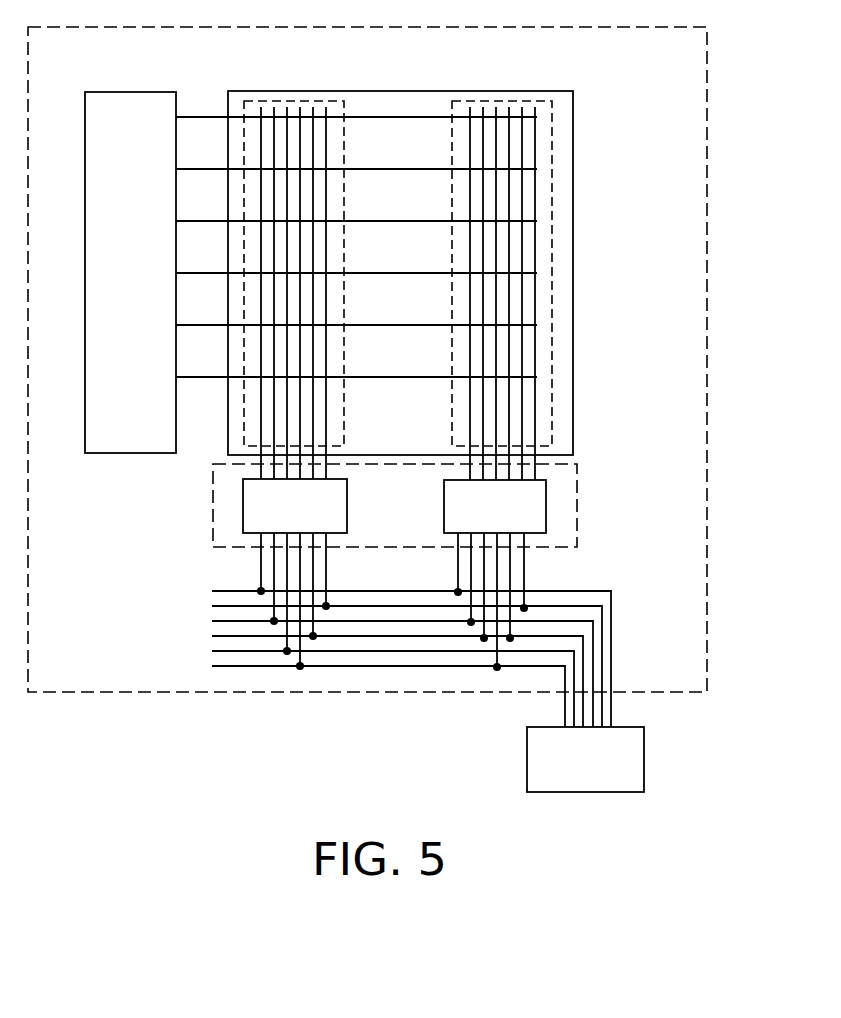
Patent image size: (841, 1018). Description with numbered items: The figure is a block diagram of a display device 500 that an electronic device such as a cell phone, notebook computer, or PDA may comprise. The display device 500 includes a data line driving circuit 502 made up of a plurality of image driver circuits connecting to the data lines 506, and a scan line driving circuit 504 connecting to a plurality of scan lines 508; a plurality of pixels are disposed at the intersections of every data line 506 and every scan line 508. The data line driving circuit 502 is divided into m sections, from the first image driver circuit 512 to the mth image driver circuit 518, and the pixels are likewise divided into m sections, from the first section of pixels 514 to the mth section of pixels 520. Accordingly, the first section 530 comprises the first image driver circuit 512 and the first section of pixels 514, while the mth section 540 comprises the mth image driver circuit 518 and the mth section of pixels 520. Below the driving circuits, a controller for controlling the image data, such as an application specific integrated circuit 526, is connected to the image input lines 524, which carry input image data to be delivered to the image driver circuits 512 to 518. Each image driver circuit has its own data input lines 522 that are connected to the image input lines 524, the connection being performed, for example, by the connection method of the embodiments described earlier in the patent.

The display device 500 is at (709, 363).
The data line driving circuit 502 is at (213, 513).
The scan line driving circuit 504 is at (126, 92).
The data lines 506 is at (535, 82).
The scan lines 508 is at (641, 91).
The first image driver circuit 512 is at (347, 504).
The first section of pixels 514 is at (344, 441).
The mth image driver circuit 518 is at (546, 504).
The mth section of pixels 520 is at (553, 444).
The data input lines 522 is at (444, 550).
The image input lines 524 is at (204, 588).
The application specific integrated circuit (ASIC) 526 is at (527, 762).
The first section 530 is at (392, 430).
The mth section 540 is at (624, 432).